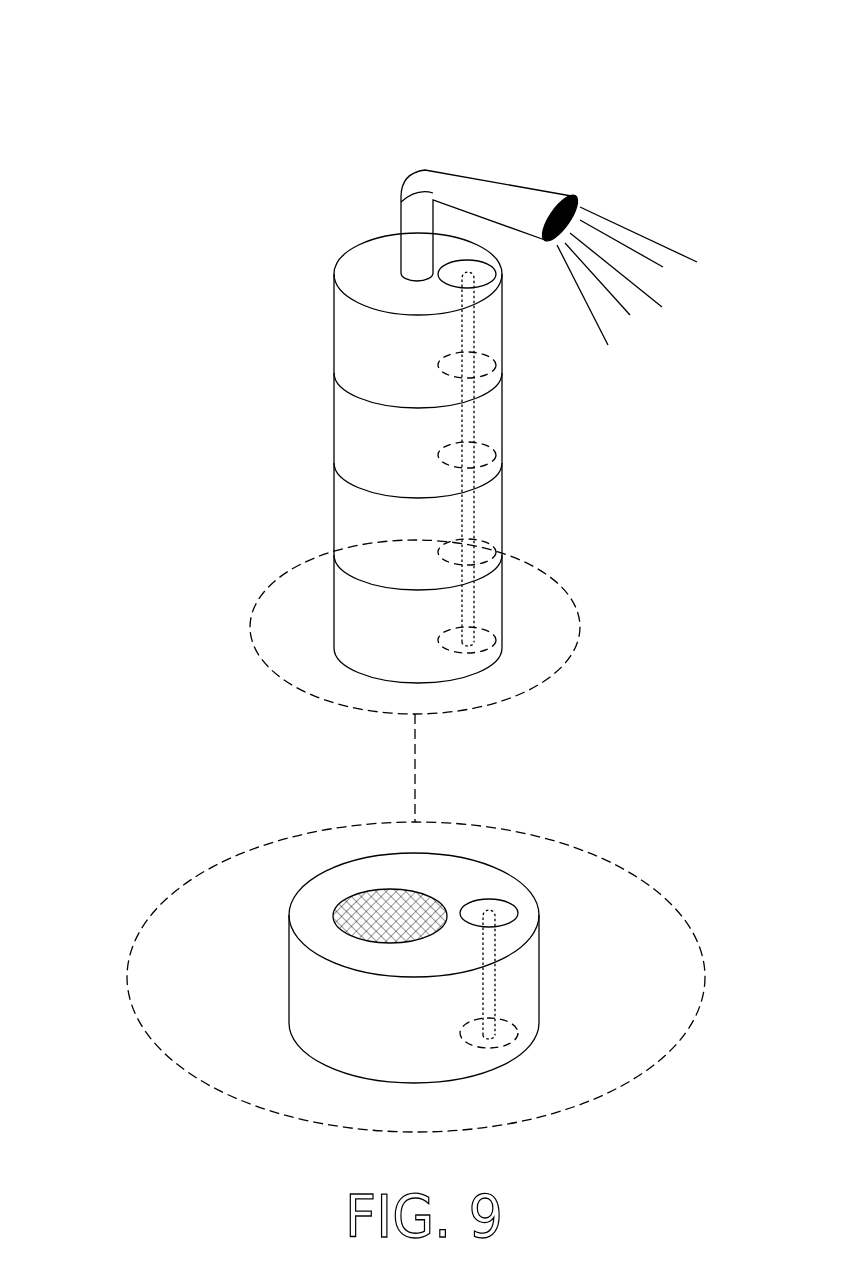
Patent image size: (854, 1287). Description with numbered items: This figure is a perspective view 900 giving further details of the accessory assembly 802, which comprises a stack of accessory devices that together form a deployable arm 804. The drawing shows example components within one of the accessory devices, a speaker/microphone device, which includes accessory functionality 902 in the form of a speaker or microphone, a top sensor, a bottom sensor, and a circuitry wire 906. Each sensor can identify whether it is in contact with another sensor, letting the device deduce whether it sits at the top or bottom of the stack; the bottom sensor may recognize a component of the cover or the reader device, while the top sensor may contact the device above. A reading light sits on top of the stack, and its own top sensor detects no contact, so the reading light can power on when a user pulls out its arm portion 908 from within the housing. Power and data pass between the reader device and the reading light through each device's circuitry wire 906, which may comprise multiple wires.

The perspective view 900 is at (145, 67).
The accessory assembly 802 is at (180, 267).
The deployable arm 804 is at (265, 347).
The arm portion 908 is at (517, 167).
The accessory functionality 902 is at (334, 902).
The circuitry wire 906 is at (501, 981).